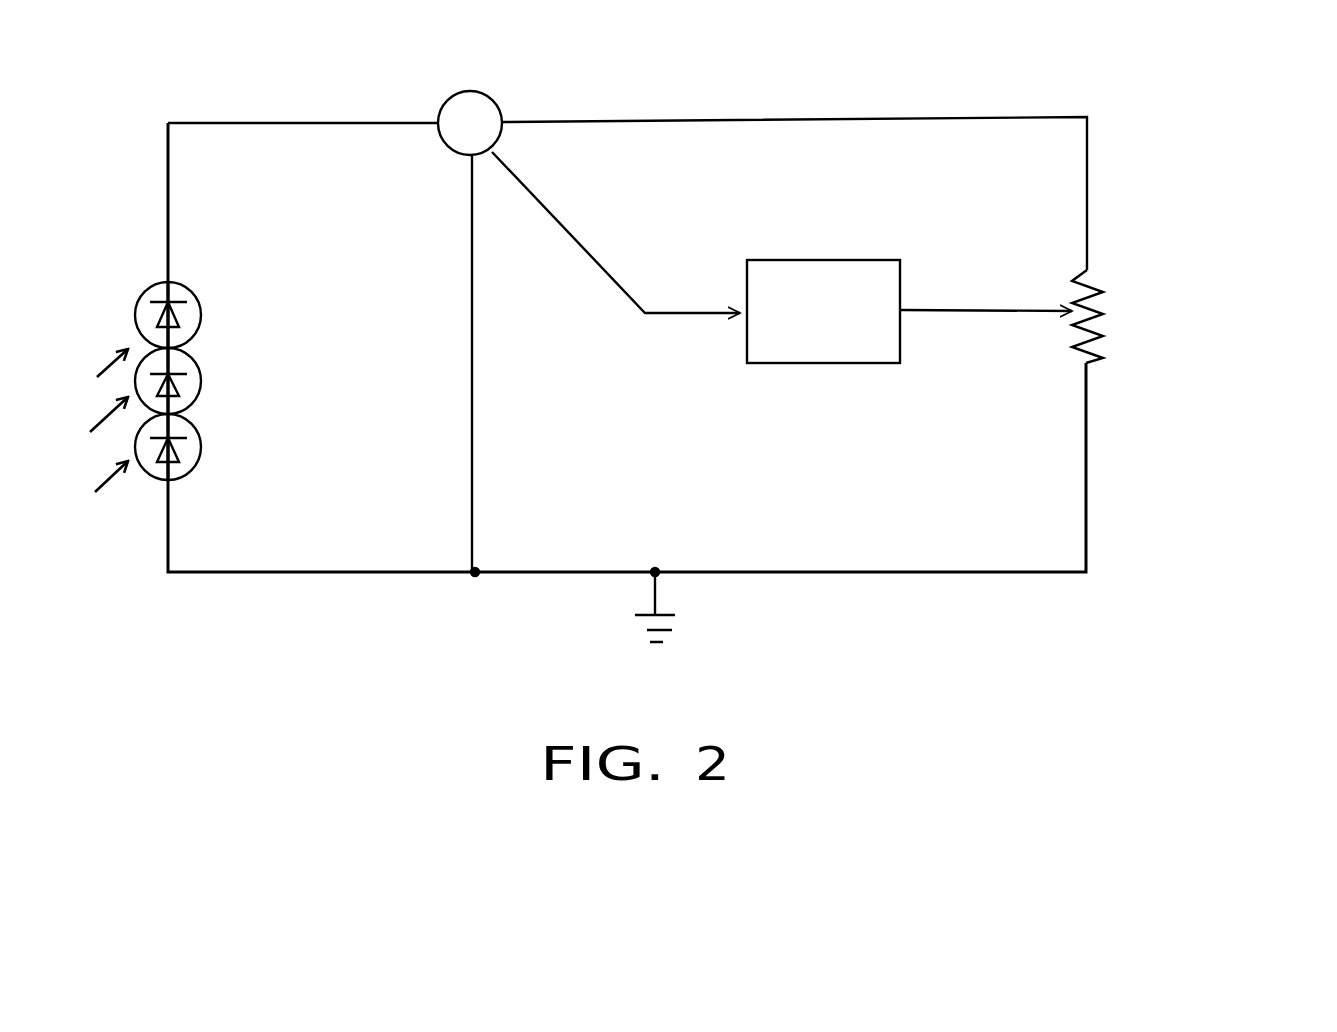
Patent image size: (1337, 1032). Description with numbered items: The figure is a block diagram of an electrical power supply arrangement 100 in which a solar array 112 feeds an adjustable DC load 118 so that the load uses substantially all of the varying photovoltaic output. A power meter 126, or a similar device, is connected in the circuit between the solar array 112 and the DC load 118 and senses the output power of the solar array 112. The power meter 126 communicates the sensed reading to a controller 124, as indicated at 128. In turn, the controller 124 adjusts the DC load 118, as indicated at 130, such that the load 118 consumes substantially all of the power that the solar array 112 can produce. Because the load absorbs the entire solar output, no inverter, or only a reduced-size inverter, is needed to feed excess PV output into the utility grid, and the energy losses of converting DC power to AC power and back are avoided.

The electrical power supply arrangement 100 is at (262, 683).
The solar array 112 is at (146, 293).
The DC load 118 is at (1088, 343).
The controller 124 is at (828, 364).
The power meter 126 is at (452, 150).
The communication of sensed reading 128 is at (677, 313).
The adjustment of DC load 130 is at (976, 310).